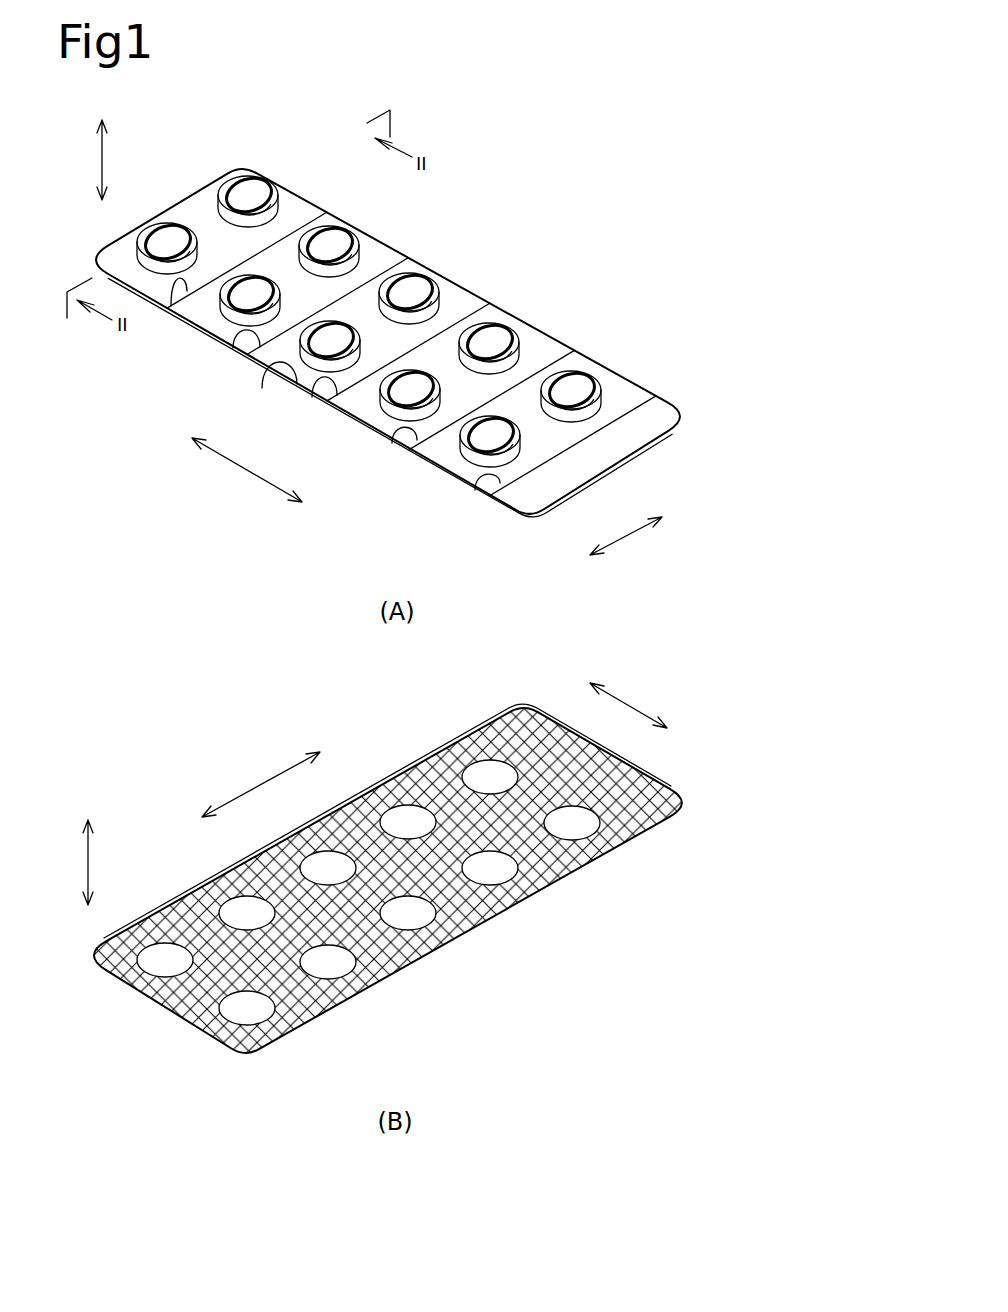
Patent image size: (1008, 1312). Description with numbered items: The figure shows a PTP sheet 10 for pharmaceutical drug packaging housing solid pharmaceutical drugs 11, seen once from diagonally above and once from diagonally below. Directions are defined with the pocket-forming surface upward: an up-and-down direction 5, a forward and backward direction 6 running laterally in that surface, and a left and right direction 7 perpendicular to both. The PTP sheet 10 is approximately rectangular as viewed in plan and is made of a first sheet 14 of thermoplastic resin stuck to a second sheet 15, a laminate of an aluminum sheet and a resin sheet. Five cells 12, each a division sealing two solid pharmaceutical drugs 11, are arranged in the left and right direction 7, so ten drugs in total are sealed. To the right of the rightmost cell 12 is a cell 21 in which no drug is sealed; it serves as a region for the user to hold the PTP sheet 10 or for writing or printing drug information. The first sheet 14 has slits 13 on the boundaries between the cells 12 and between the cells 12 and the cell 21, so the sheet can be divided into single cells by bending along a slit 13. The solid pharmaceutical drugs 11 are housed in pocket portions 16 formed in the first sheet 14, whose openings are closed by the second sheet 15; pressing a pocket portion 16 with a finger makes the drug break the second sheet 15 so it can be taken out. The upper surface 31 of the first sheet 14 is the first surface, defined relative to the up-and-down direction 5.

The up-and-down direction 5 is at (103, 161).
The forward and backward direction 6 is at (628, 536).
The left and right direction 7 is at (245, 470).
The PTP sheet 10 is at (533, 181).
The solid pharmaceutical drug 11 is at (253, 178).
The cell 12 is at (313, 198).
The slit 13 is at (171, 306).
The first sheet 14 is at (281, 371).
The second sheet 15 is at (314, 1003).
The pocket portion 16 is at (183, 258).
The cell 21 is at (655, 447).
The upper surface 31 is at (193, 228).